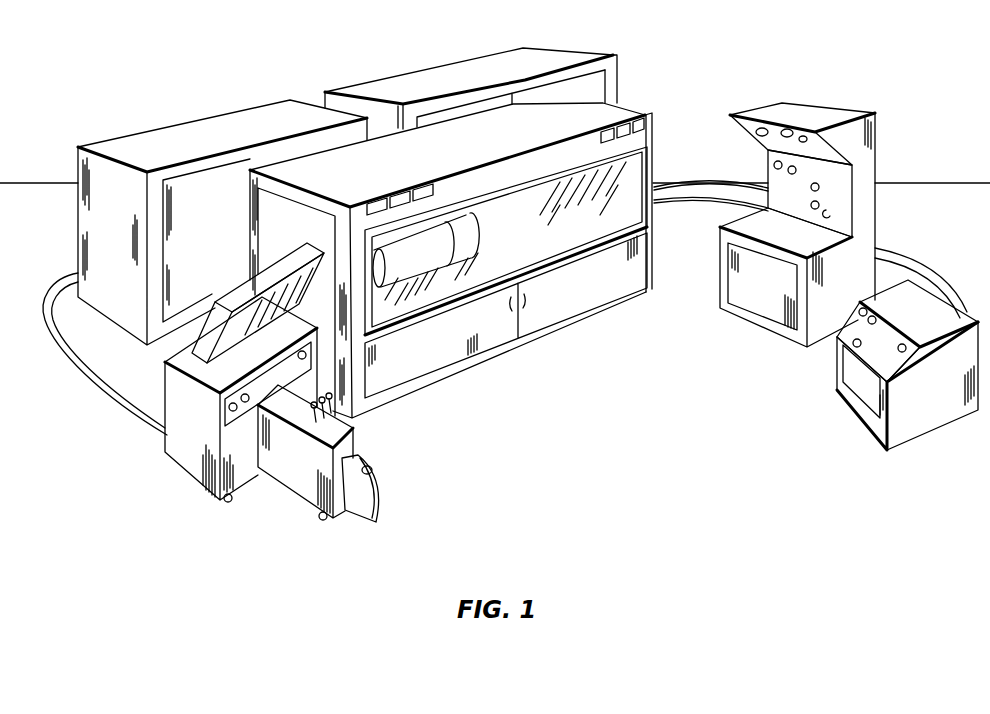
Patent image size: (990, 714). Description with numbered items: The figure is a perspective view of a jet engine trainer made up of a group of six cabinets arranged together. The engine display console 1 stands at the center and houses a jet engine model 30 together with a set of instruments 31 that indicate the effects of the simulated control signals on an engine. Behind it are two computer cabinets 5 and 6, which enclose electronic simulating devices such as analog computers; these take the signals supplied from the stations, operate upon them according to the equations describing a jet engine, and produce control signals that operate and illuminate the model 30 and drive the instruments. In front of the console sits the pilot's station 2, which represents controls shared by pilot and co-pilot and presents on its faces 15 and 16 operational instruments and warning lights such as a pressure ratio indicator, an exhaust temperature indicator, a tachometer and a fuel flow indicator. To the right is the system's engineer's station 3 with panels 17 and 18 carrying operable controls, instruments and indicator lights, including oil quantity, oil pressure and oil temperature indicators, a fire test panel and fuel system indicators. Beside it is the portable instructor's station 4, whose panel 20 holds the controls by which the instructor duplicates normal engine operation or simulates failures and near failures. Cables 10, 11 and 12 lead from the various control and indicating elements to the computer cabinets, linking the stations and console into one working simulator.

The engine display console 1 is at (623, 118).
The pilot's station 2 is at (190, 468).
The system's engineer's station 3 is at (815, 338).
The instructor's station 4 is at (902, 432).
The computer cabinet 5 is at (125, 142).
The computer cabinet 6 is at (437, 78).
The cable 10 is at (72, 370).
The cable 11 is at (688, 211).
The cable 12 is at (713, 192).
The panel 15 is at (190, 343).
The panel 16 is at (233, 415).
The panel 17 is at (793, 124).
The panel 18 is at (845, 192).
The panel 20 is at (837, 338).
The model 30 is at (615, 180).
The instruments 31 is at (637, 137).